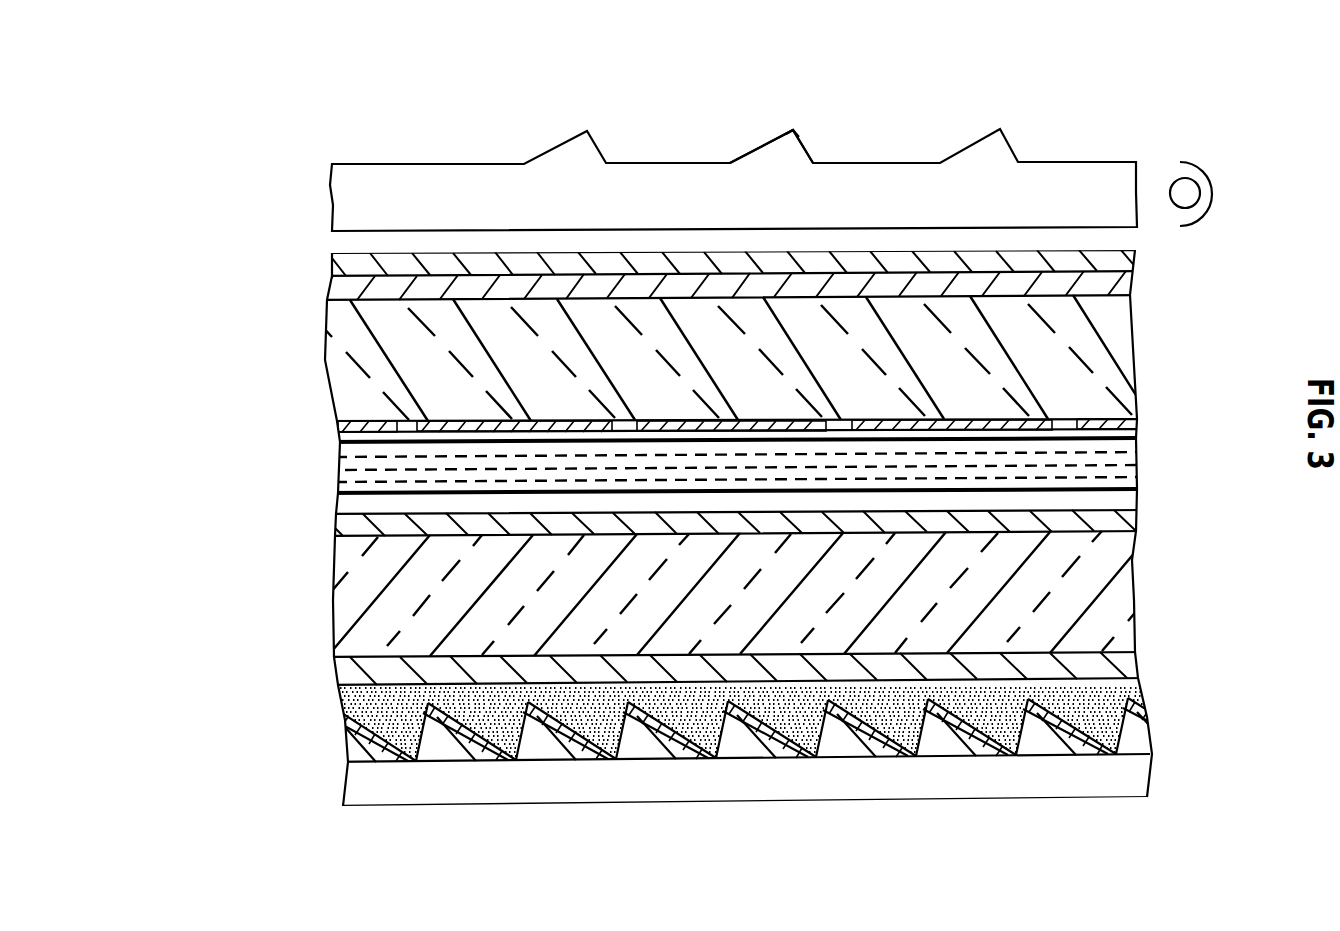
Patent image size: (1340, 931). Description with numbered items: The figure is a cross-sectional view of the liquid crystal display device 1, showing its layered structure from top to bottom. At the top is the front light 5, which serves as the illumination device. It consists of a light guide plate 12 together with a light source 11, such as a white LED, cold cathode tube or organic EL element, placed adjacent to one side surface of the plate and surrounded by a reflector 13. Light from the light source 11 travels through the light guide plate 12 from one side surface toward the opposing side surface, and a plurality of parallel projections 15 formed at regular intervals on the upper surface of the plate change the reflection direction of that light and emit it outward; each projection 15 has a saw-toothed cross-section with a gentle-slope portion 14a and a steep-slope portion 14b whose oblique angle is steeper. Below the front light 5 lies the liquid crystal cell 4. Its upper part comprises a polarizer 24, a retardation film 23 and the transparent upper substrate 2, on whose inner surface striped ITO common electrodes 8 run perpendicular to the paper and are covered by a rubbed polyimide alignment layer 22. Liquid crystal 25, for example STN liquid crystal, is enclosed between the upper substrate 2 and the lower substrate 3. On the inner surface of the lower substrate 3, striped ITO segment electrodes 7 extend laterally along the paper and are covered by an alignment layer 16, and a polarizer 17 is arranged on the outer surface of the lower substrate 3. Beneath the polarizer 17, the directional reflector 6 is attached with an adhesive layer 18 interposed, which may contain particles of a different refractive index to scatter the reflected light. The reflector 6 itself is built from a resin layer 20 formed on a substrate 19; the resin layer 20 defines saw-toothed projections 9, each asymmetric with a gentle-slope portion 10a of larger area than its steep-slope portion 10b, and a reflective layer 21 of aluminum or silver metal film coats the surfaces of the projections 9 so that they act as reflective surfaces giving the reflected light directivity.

The liquid crystal display device 1 is at (395, 114).
The front light 5 is at (302, 197).
The light guide plate 12 is at (447, 176).
The gentle-slope portion 14a is at (757, 150).
The steep-slope portion 14b is at (800, 143).
The projections 15 is at (785, 143).
The light source 11 is at (1182, 182).
The reflector 13 is at (1213, 169).
The liquid crystal cell 4 is at (307, 479).
The polarizer 24 is at (733, 263).
The retardation film 23 is at (741, 285).
The upper substrate 2 is at (750, 358).
The alignment layer 22 is at (739, 425).
The common electrodes 8 is at (952, 425).
The liquid crystal 25 is at (735, 465).
The alignment layer 16 is at (735, 498).
The segment electrodes 7 is at (749, 523).
The lower substrate 3 is at (714, 594).
The polarizer 17 is at (738, 668).
The reflector 6 is at (312, 741).
The adhesive layer 18 is at (740, 724).
The resin layer 20 is at (774, 729).
The projections 9 is at (778, 729).
The gentle-slope portion 10a is at (772, 729).
The steep-slope portion 10b is at (782, 729).
The reflective layer 21 is at (765, 731).
The substrate 19 is at (735, 801).